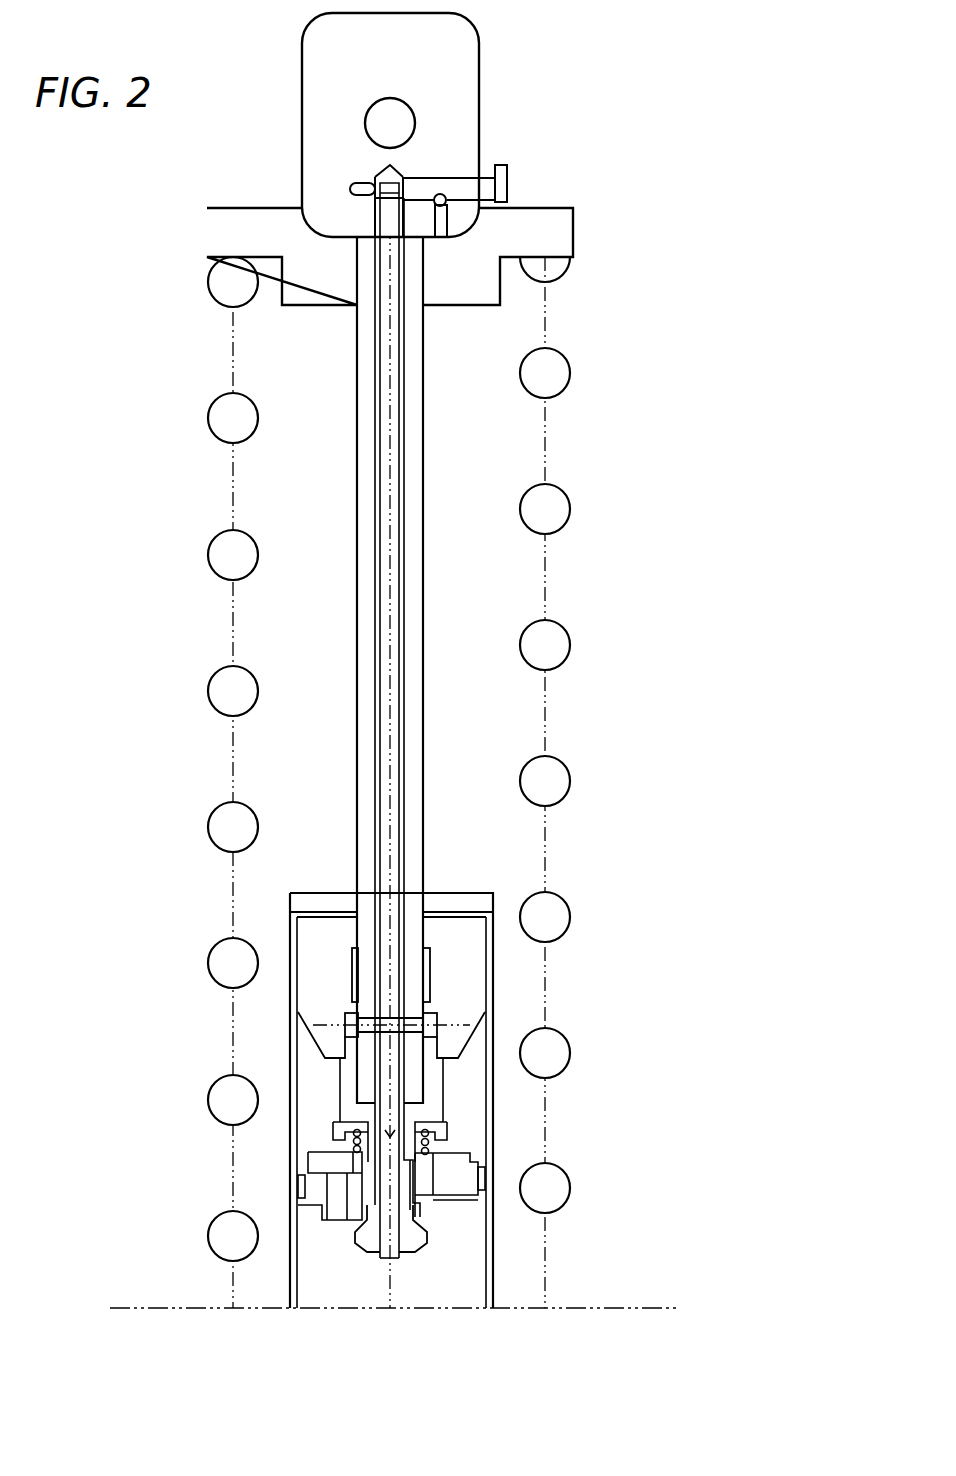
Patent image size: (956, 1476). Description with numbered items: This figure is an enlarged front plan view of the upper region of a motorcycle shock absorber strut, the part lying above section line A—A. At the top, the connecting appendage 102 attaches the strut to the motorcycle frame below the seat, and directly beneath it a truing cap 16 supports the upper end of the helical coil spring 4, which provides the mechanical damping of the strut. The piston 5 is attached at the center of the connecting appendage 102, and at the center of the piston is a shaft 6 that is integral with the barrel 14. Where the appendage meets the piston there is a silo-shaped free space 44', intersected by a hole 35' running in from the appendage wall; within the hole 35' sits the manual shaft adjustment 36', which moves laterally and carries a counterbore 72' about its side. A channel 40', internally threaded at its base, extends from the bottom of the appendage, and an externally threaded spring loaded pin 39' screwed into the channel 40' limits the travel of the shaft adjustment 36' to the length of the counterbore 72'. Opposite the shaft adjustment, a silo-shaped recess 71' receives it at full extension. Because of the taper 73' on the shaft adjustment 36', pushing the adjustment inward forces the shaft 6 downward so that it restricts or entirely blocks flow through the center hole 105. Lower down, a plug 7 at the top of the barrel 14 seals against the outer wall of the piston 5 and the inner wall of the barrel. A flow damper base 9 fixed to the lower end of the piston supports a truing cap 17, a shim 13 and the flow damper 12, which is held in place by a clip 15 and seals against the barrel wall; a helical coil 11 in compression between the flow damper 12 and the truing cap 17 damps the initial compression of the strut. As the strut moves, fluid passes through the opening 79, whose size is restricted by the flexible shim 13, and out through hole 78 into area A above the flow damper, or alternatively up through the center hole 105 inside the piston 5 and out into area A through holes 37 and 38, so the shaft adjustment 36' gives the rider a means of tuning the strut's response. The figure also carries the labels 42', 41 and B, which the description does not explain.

The connecting appendage 102 is at (458, 42).
The lever bar 42' is at (472, 136).
The manual shaft adjustment 36' is at (531, 154).
The free space 44' is at (329, 143).
The hole 35' is at (318, 170).
The silo shaped recess 71' is at (308, 190).
The counterbore 72' is at (509, 179).
The bracket 41 is at (443, 218).
The truing cap 16 is at (553, 230).
The channel 40' is at (579, 267).
The spring loaded pin 39' is at (529, 280).
The taper 73' is at (352, 275).
The shaft 6 is at (391, 345).
The piston 5 is at (412, 407).
The helical coil spring 4 is at (558, 372).
The plug 7 is at (465, 902).
The hole 37 is at (433, 1028).
The barrel 14 is at (295, 1010).
The hole 38 is at (368, 1028).
The flow damper base 9 is at (435, 1095).
The truing cap 17 is at (447, 1125).
The hole 78 is at (298, 1154).
The helical coil 11 is at (298, 1170).
The flow damper 12 is at (458, 1177).
The opening 79 is at (436, 1208).
The shim 13 is at (450, 1220).
The clip 15 is at (363, 1247).
The center hole 105 is at (395, 1252).
The area A is at (467, 1063).
The section B- B is at (293, 907).